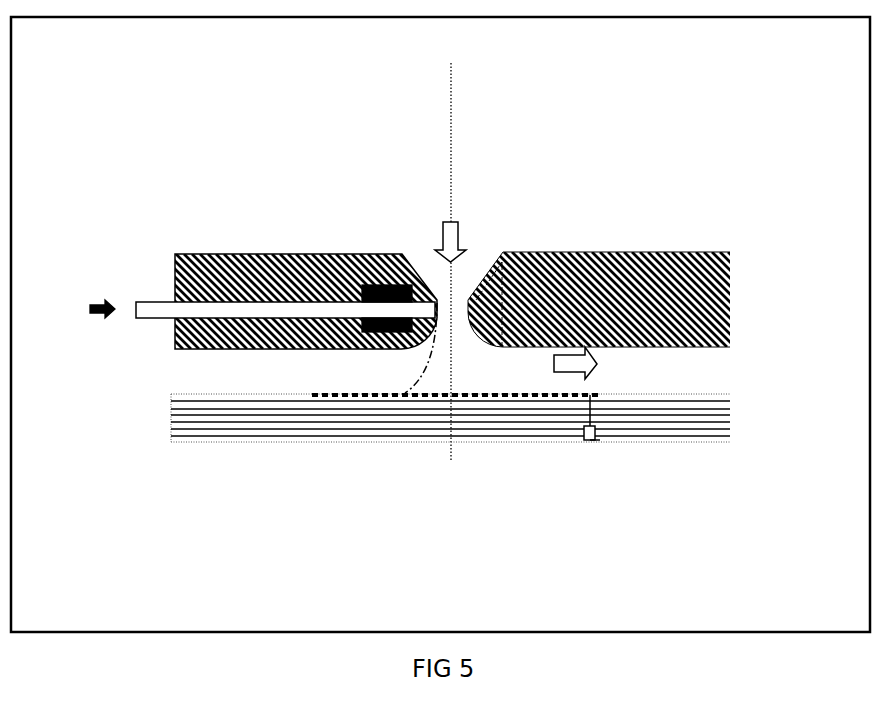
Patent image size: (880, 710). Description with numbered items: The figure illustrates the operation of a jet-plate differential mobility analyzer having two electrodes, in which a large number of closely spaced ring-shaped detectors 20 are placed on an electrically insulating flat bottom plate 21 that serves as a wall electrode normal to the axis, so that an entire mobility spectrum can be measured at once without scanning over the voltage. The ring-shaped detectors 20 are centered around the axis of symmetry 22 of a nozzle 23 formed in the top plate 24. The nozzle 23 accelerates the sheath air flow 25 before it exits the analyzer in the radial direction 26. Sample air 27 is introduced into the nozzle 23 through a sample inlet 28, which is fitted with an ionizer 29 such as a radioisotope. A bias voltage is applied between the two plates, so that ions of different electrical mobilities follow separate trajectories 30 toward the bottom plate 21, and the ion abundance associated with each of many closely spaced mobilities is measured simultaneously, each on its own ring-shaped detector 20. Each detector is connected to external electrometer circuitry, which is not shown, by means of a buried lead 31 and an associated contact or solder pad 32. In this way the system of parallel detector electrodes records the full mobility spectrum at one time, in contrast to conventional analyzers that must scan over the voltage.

The ring-shaped detector 20 is at (352, 400).
The electrically insulating flat bottom plate 21 is at (218, 452).
The axis of symmetry 22 is at (455, 127).
The nozzle 23 is at (505, 270).
The top plate 24 is at (690, 272).
The sheath air flow 25 is at (465, 215).
The radial direction 26 is at (560, 375).
The sample air 27 is at (101, 283).
The sample inlet 28 is at (270, 300).
The ionizer 29 is at (365, 283).
The trajectory 30 is at (412, 363).
The buried lead 31 is at (597, 410).
The contact or solder pad 32 is at (585, 442).